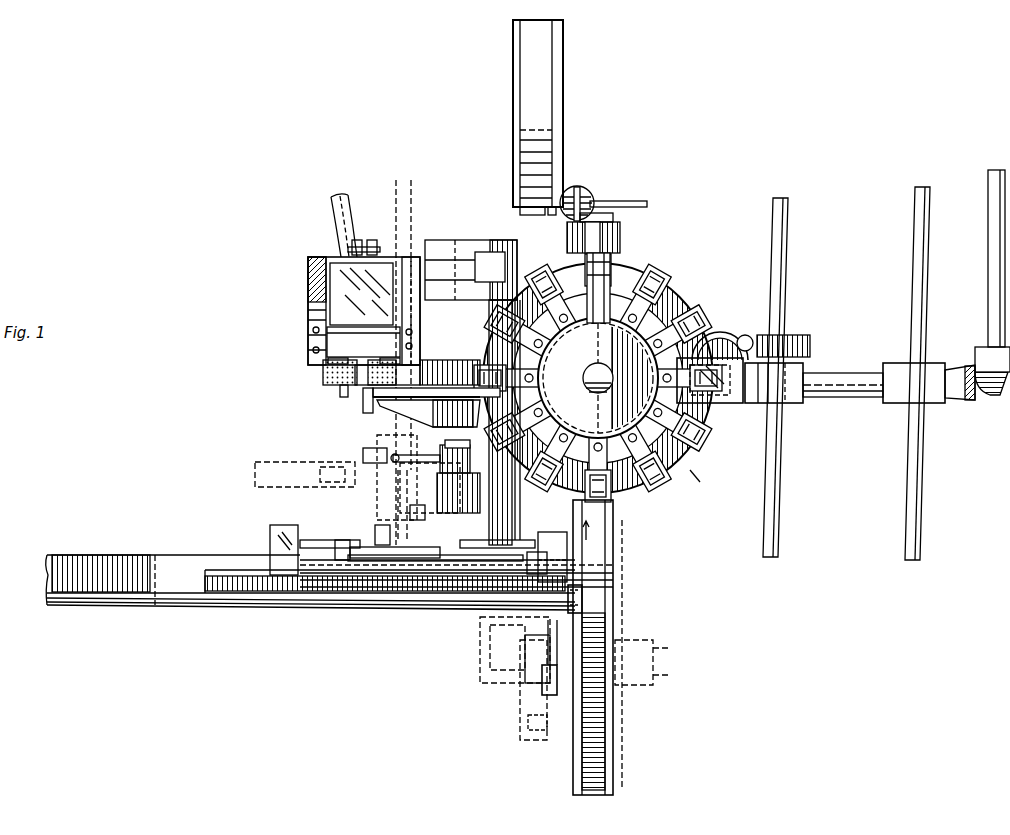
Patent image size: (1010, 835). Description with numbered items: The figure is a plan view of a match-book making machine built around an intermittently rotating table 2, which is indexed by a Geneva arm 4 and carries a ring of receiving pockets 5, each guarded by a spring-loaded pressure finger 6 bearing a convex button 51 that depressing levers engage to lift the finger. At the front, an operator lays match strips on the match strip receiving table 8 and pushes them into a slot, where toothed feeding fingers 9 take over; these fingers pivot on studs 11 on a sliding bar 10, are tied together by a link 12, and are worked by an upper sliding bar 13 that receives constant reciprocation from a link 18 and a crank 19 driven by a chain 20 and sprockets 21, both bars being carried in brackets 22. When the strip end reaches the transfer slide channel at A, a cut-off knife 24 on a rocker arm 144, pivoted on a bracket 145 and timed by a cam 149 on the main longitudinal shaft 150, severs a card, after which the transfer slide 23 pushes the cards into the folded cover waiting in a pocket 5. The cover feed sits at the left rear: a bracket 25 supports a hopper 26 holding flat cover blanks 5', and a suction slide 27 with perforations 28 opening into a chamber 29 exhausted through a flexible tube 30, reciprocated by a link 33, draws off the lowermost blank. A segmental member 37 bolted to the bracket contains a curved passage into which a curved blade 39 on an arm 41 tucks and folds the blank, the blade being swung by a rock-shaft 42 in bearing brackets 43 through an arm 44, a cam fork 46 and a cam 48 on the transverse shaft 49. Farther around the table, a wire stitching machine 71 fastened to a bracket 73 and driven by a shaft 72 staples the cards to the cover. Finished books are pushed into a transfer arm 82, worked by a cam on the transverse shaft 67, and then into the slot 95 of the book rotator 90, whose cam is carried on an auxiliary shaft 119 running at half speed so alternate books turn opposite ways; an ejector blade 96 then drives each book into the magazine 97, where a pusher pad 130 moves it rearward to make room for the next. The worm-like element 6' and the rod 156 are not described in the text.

The intermittently rotating table 2 is at (695, 480).
The Geneva arm 4 is at (770, 332).
The receiving pocket 5 is at (623, 382).
The cover blank 5' is at (701, 404).
The pressure finger 6 is at (598, 378).
The worm wheel 6' is at (722, 319).
The match strip receiving table 8 is at (163, 566).
The feeding fingers 9 is at (370, 602).
The sliding bar 10 is at (330, 560).
The studs 11 is at (355, 548).
The link 12 is at (470, 598).
The sliding bar 13 is at (363, 341).
The link 18 is at (375, 535).
The crank 19 is at (613, 560).
The chain 20 is at (440, 592).
The sprockets 21 is at (368, 497).
The brackets 22 is at (270, 536).
The transfer slide 23 is at (595, 630).
The cut-off knife 24 is at (585, 612).
The bracket 25 is at (308, 262).
The hopper 26 is at (312, 324).
The slide 27 is at (368, 250).
The perforations 28 is at (340, 392).
The chamber 29 is at (330, 300).
The flexible tube 30 is at (331, 216).
The link 33 is at (357, 240).
The segmental member 37 is at (440, 366).
The curved blade 39 is at (363, 400).
The arm 41 is at (432, 420).
The rock-shaft 42 is at (478, 306).
The bearing brackets 43 is at (538, 268).
The arm 44 is at (455, 470).
The cam fork 46 is at (363, 455).
The cam 48 is at (282, 487).
The transverse shaft 49 is at (412, 228).
The button 51 is at (630, 300).
The transverse shaft 67 is at (786, 292).
The wire stitching machine 71 is at (736, 405).
The shaft 72 is at (835, 373).
The bracket 73 is at (798, 404).
The transfer arm 82 is at (620, 236).
The book rotator 90 is at (583, 190).
The slot 95 is at (598, 205).
The ejector blade 96 is at (632, 200).
The magazine 97 is at (558, 152).
The auxiliary shaft 119 is at (916, 328).
The pusher pad 130 is at (530, 214).
The rocker arm 144 is at (545, 672).
The bracket 145 is at (485, 650).
The cam 149 is at (535, 740).
The longitudinal shaft 150 is at (525, 660).
The rod 156 is at (988, 330).
The transfer slide channel position A is at (592, 598).